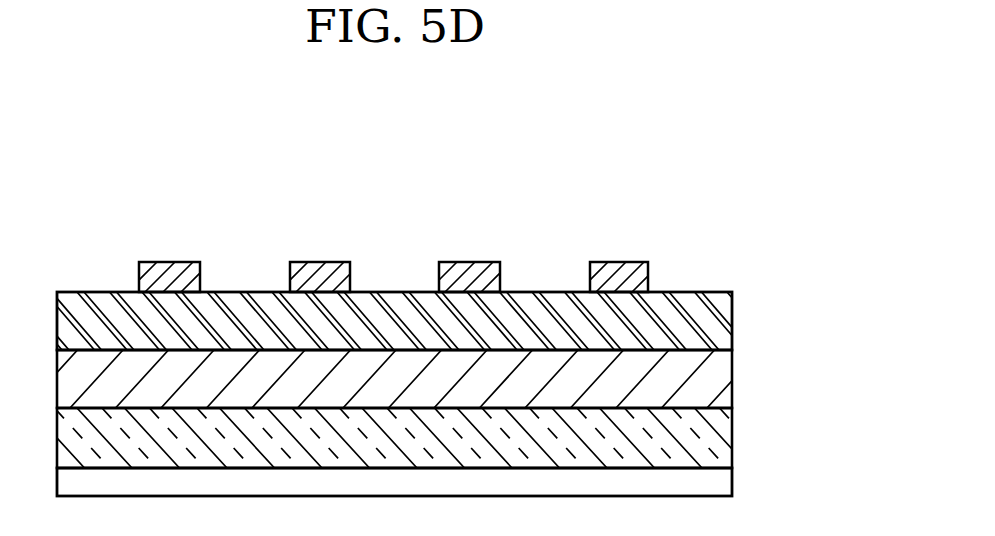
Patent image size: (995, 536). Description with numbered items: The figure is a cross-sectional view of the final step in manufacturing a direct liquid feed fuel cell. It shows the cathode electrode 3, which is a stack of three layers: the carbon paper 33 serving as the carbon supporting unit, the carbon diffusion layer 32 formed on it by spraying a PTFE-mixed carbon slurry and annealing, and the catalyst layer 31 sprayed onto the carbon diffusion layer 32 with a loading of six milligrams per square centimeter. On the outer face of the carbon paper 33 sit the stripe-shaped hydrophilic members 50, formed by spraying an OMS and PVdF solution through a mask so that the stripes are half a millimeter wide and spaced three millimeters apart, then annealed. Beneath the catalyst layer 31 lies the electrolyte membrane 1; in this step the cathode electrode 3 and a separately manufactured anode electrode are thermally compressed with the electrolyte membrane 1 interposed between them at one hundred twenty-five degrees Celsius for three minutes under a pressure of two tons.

The electrolyte membrane 1 is at (733, 482).
The cathode electrode 3 is at (440, 380).
The catalyst layer 31 is at (733, 437).
The carbon diffusion layer 32 is at (733, 378).
The carbon paper 33 is at (430, 321).
The stripe-shaped hydrophilic member 50 is at (626, 262).